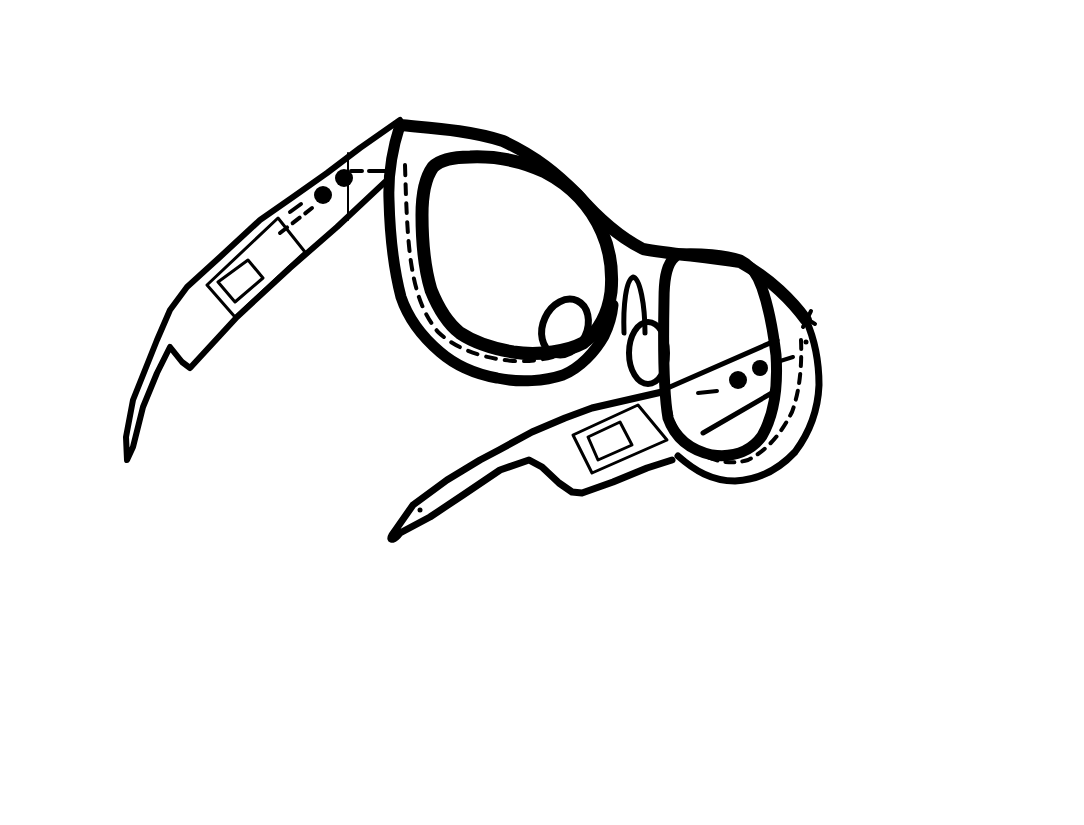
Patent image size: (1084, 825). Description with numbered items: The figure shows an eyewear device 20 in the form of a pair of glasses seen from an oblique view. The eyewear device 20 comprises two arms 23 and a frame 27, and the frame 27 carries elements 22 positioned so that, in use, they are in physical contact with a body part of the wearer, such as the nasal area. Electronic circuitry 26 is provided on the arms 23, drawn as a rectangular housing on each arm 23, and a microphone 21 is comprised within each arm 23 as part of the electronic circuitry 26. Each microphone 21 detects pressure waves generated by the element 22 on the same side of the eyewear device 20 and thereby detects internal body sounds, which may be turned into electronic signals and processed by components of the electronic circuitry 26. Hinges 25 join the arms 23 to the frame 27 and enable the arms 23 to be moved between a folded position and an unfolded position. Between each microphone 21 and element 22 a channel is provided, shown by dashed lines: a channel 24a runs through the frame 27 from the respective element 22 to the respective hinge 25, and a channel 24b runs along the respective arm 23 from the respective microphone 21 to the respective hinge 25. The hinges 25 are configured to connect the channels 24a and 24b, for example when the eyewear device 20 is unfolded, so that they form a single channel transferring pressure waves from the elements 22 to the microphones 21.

The eyewear device 20 is at (803, 585).
The microphone 21 is at (242, 277).
The element 22 is at (550, 317).
The arm 23 is at (143, 367).
The channel 24a is at (420, 297).
The channel 24b is at (295, 206).
The hinge 25 is at (377, 150).
The electronic circuitry 26 is at (273, 233).
The frame 27 is at (600, 203).